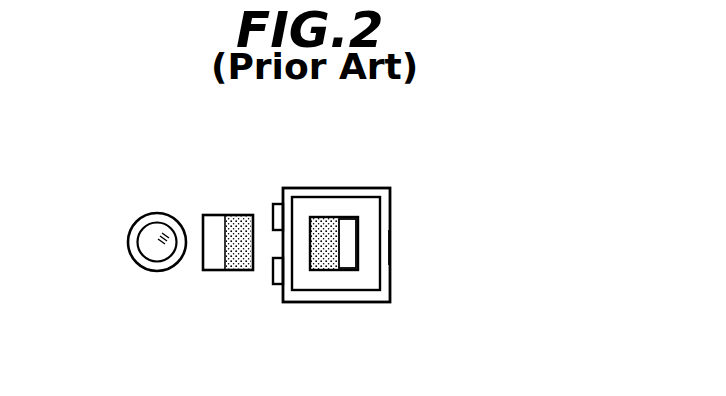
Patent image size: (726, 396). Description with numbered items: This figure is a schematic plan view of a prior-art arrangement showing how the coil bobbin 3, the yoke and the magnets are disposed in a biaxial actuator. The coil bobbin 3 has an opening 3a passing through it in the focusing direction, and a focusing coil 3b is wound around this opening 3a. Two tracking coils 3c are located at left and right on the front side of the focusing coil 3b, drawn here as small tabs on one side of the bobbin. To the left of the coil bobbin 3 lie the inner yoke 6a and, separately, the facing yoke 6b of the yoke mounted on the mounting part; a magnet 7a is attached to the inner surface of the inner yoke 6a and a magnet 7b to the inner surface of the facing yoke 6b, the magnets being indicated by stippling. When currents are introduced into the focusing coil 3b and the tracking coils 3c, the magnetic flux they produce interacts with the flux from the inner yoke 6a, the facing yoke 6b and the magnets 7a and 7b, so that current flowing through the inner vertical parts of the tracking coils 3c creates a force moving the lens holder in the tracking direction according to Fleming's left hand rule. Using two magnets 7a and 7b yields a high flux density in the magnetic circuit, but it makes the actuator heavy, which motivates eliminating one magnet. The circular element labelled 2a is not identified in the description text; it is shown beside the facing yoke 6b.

The lamp / light source 2a is at (152, 243).
The coil bobbin 3 is at (355, 190).
The opening 3a is at (355, 200).
The focusing coil 3b is at (391, 248).
The tracking coils 3c is at (275, 207).
The inner yoke 6a is at (350, 257).
The facing yoke 6b is at (209, 258).
The magnet 7a is at (325, 265).
The magnet 7b is at (232, 271).